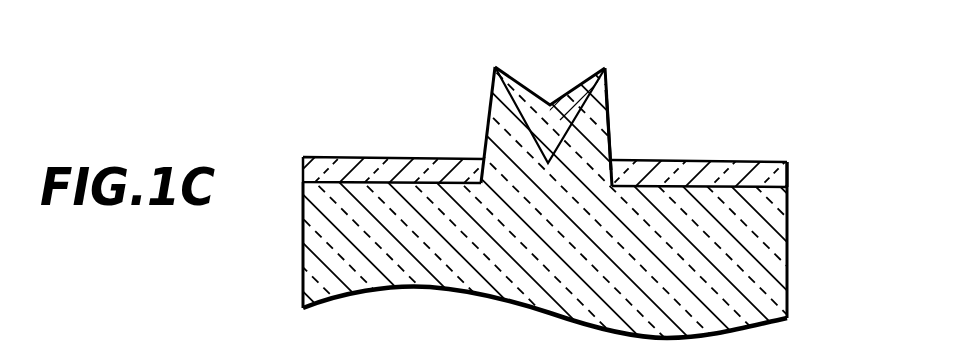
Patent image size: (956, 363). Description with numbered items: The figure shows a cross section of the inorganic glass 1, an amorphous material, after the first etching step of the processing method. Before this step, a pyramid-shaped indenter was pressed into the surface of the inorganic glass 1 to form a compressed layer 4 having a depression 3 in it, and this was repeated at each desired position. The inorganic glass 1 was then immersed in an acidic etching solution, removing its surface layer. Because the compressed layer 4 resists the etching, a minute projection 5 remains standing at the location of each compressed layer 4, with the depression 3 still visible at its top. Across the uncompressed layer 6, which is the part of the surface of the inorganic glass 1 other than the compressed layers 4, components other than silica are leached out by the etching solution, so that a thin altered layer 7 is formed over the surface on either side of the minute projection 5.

The inorganic glass 1 is at (787, 222).
The depression 3 is at (566, 92).
The compressed layer 4 is at (607, 110).
The minute projection 5 is at (612, 128).
The uncompressed layer 6 is at (787, 172).
The altered layer 7 is at (716, 161).